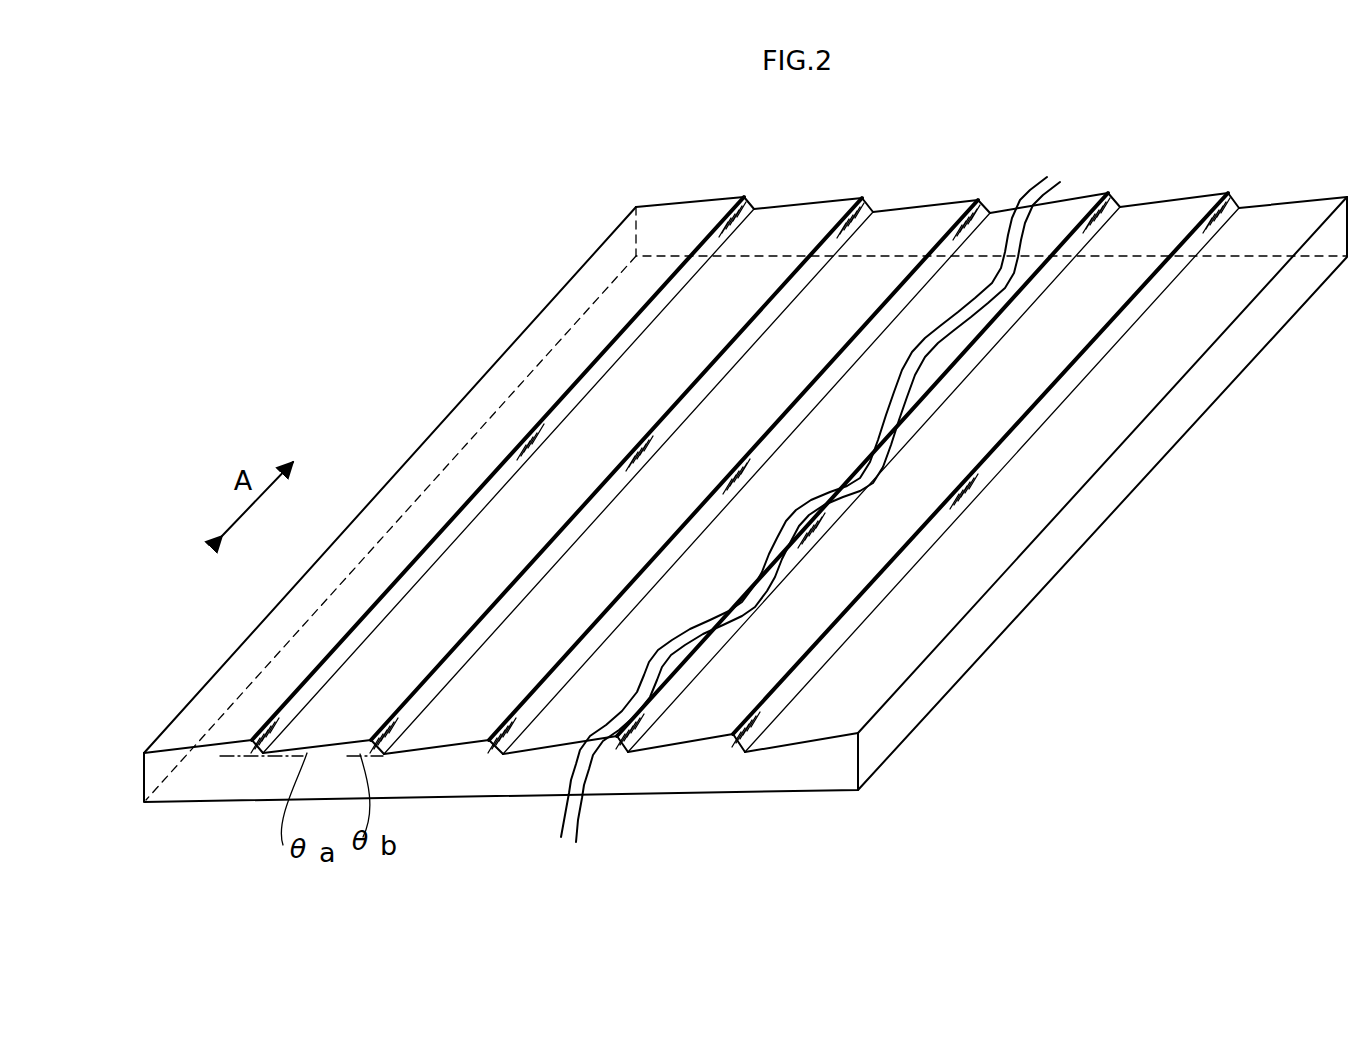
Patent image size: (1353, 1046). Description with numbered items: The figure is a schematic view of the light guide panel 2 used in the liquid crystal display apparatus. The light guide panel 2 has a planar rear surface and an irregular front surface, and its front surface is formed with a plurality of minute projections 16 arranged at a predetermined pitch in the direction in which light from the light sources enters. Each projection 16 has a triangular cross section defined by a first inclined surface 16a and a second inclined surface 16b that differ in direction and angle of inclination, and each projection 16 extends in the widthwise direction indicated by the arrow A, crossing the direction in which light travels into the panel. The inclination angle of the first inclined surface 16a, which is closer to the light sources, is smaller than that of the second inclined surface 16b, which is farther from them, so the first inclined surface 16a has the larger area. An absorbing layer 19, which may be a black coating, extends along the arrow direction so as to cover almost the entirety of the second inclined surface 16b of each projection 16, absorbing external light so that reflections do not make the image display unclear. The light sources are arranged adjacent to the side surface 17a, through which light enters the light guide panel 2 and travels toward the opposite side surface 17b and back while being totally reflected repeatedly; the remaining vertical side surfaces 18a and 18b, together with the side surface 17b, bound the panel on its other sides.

The light guide panel 2 is at (949, 708).
The projection 16 is at (673, 190).
The first inclined surface 16a is at (755, 233).
The second inclined surface 16b is at (813, 257).
The side surface 17a is at (438, 444).
The opposite side surface 17b is at (1228, 362).
The side surface 18a is at (508, 774).
The side surface 18b is at (910, 233).
The absorbing layer 19 is at (580, 390).